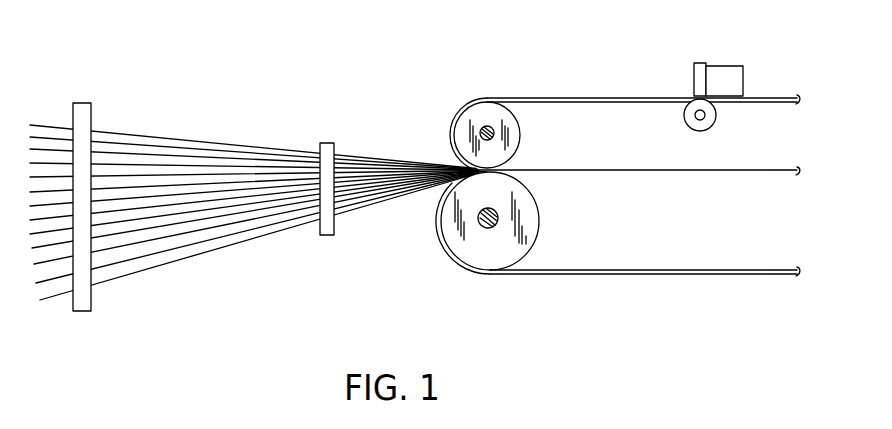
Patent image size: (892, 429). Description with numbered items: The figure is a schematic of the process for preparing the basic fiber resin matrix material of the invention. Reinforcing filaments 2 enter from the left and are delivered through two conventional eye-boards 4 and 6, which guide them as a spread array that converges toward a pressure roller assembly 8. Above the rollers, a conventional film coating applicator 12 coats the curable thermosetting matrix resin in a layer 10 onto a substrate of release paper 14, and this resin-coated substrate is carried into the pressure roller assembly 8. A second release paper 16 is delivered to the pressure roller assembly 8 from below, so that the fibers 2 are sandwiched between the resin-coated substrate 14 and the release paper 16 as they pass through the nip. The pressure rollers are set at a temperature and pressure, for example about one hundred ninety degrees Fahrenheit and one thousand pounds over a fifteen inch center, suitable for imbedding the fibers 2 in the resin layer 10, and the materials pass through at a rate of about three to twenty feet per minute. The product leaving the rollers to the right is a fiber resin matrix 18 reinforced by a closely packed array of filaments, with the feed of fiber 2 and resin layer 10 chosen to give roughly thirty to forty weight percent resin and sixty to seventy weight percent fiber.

The reinforcing filaments 2 is at (244, 143).
The eye-board 4 is at (91, 119).
The eye-board 6 is at (329, 143).
The pressure roller assembly 8 is at (432, 230).
The resin layer 10 is at (550, 96).
The film coating applicator 12 is at (711, 66).
The release paper 14 is at (550, 102).
The release paper 16 is at (558, 275).
The fiber resin matrix 18 is at (586, 172).